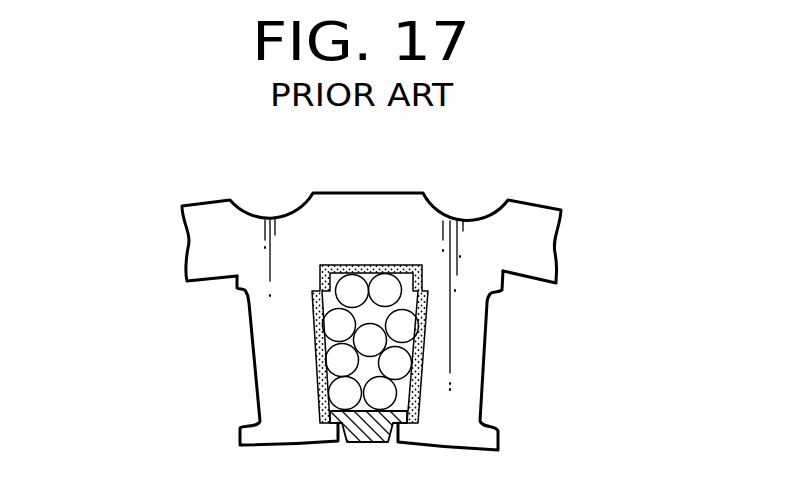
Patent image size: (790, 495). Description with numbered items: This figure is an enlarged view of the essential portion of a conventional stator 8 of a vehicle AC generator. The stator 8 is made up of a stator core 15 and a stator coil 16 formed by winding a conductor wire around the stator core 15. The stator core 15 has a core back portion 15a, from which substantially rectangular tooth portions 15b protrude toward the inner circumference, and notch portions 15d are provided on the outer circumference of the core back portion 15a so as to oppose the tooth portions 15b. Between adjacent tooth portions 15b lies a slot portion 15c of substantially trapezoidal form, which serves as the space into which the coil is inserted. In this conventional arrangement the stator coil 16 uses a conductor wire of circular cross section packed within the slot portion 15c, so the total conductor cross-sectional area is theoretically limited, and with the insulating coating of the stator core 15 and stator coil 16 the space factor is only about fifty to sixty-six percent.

The stator 8 is at (622, 200).
The stator core 15 is at (568, 247).
The core back portion 15a is at (208, 250).
The tooth portion 15b is at (270, 343).
The slot portion 15c is at (497, 390).
The notch portion 15d is at (277, 218).
The stator coil 16 is at (403, 325).